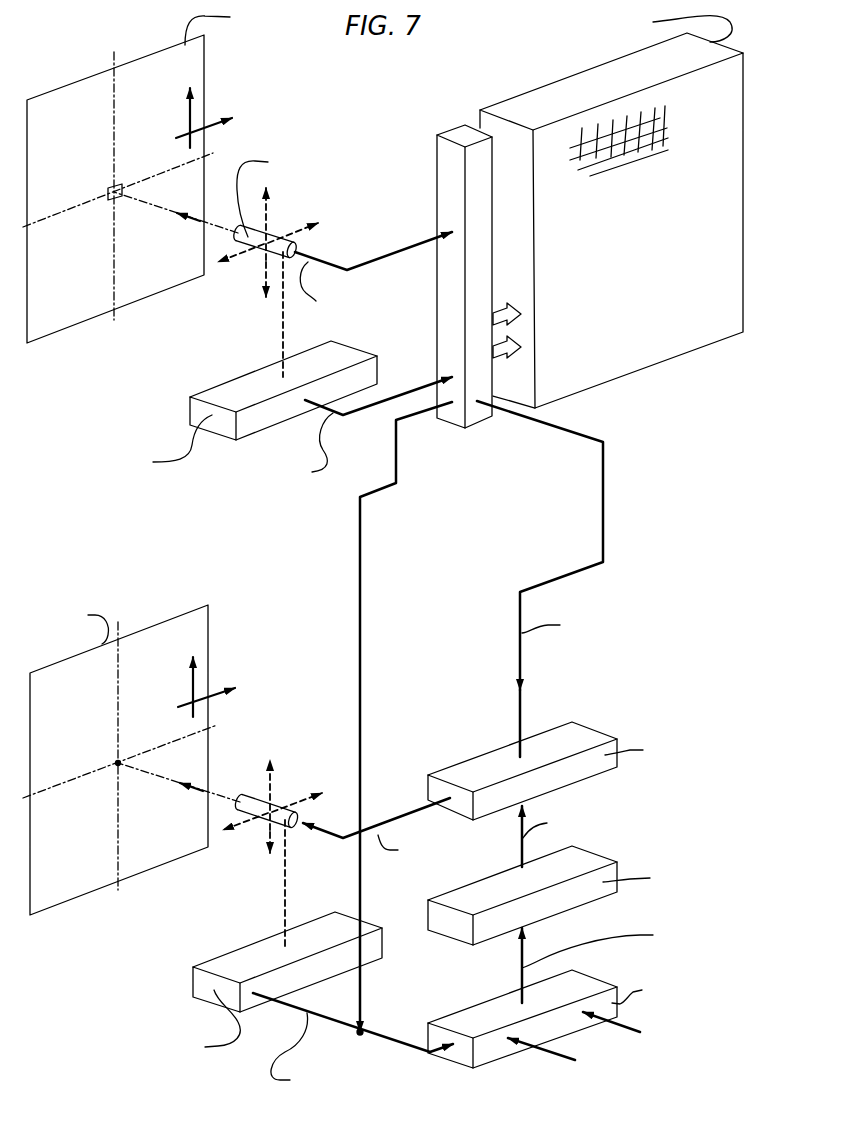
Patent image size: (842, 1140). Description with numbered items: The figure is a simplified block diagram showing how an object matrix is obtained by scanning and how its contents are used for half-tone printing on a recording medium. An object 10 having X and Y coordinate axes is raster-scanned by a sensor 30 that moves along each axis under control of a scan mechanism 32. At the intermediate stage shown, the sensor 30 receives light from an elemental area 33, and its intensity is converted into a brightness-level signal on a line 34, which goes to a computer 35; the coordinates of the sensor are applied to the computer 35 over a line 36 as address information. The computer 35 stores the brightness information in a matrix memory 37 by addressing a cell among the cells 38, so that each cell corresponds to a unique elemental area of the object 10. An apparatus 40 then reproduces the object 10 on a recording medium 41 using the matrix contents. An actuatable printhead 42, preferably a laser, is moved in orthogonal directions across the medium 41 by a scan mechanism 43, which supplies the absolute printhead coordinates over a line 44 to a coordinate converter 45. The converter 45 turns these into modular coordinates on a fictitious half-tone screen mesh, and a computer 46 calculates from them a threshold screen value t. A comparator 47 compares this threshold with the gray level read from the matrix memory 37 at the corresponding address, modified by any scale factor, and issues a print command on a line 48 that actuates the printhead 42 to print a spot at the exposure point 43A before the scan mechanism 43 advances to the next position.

The object 10 is at (197, 55).
The elemental area 33 is at (113, 185).
The sensor 30 is at (295, 247).
The line 34 is at (421, 241).
The scan mechanism 32 is at (238, 388).
The line 36 is at (427, 380).
The computer 35 is at (437, 166).
The matrix memory 37 is at (716, 85).
The cells 38 is at (638, 148).
The apparatus 40 is at (624, 726).
The recording medium 41 is at (198, 620).
The exposure point 43A is at (118, 763).
The printhead 42 is at (277, 803).
The line 48 is at (377, 830).
The scan mechanism 43 is at (222, 967).
The line 44 is at (389, 1037).
The comparator 47 is at (577, 735).
The computer 46 is at (583, 862).
The coordinate converter 45 is at (490, 1047).